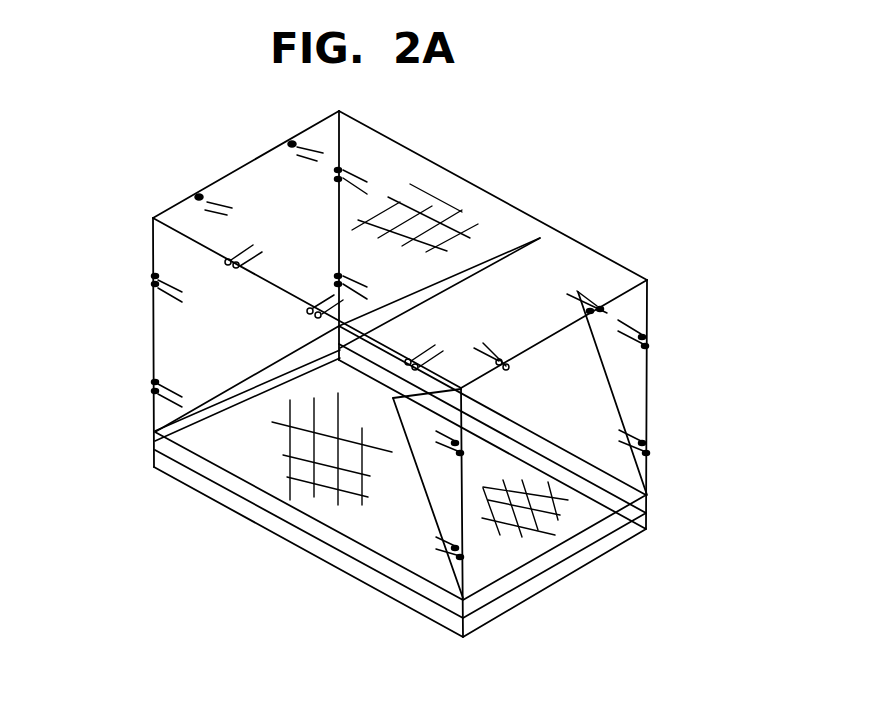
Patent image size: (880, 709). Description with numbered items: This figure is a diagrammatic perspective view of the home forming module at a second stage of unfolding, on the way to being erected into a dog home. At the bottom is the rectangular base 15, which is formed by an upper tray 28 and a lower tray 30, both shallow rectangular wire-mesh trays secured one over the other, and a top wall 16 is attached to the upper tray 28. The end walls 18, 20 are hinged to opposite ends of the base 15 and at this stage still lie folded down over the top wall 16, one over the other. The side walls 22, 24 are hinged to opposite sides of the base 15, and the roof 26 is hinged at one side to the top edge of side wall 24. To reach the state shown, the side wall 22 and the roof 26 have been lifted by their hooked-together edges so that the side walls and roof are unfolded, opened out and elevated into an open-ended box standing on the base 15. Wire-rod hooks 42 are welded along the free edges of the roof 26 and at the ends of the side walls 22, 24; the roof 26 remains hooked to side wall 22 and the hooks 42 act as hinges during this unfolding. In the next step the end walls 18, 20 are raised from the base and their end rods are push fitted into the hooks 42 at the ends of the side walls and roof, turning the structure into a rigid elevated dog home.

The rectangular base 15 is at (328, 546).
The top wall 16 is at (234, 463).
The end wall 18 is at (252, 384).
The end wall 20 is at (594, 397).
The side wall 22 is at (178, 332).
The side wall 24 is at (648, 311).
The roof 26 is at (522, 222).
The upper tray 28 is at (600, 533).
The lower tray 30 is at (545, 583).
The hook 42 is at (292, 143).